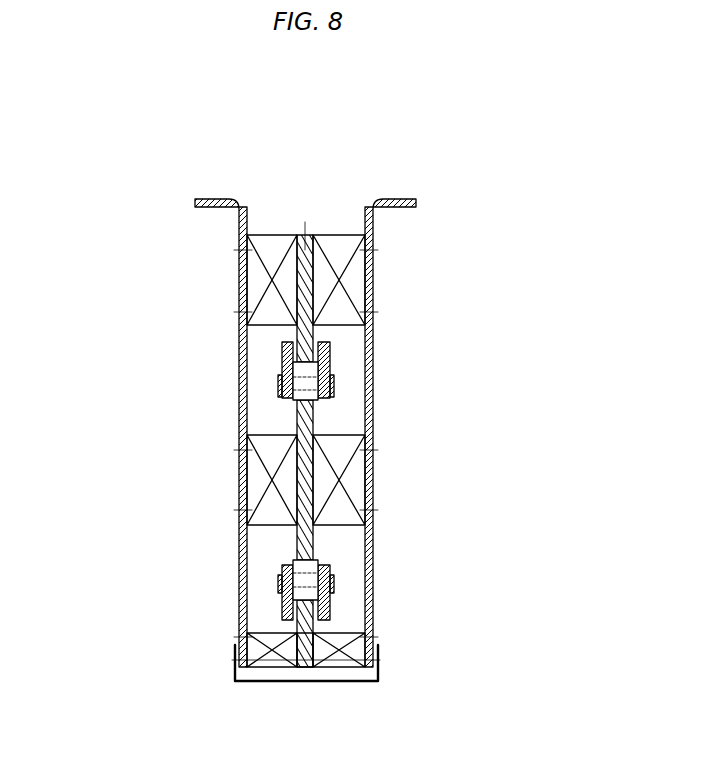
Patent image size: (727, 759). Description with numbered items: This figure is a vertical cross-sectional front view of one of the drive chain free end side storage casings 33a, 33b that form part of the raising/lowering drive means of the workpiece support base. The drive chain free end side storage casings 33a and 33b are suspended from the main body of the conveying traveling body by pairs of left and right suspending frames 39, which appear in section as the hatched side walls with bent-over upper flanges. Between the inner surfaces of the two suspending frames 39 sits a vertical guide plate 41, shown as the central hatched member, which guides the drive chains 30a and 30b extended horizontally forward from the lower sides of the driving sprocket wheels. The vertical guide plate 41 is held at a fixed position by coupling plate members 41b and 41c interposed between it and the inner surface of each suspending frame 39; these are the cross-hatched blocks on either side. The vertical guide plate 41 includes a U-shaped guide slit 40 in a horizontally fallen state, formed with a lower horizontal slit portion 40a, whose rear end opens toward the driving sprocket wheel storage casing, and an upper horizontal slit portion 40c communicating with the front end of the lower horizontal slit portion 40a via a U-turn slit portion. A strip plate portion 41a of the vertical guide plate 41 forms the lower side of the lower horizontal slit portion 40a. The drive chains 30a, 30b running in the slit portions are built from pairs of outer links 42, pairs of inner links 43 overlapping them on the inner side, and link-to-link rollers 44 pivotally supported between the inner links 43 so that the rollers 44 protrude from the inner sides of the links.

The drive chain free end side storage casing 33a is at (325, 231).
The drive chain free end side storage casing 33b is at (318, 184).
The suspending frame 39 is at (372, 296).
The vertical guide plate 41 is at (319, 424).
The strip plate portion 41a is at (307, 662).
The coupling plate member 41b is at (355, 275).
The coupling plate member 41c is at (255, 281).
The U-shaped guide slit 40 is at (282, 380).
The lower horizontal slit portion 40a is at (334, 580).
The upper horizontal slit portion 40c is at (209, 377).
The outer link 42 is at (330, 367).
The inner link 43 is at (290, 340).
The link-to-link roller 44 is at (333, 384).
The drive chain 30a is at (335, 353).
The drive chain 30b is at (299, 478).